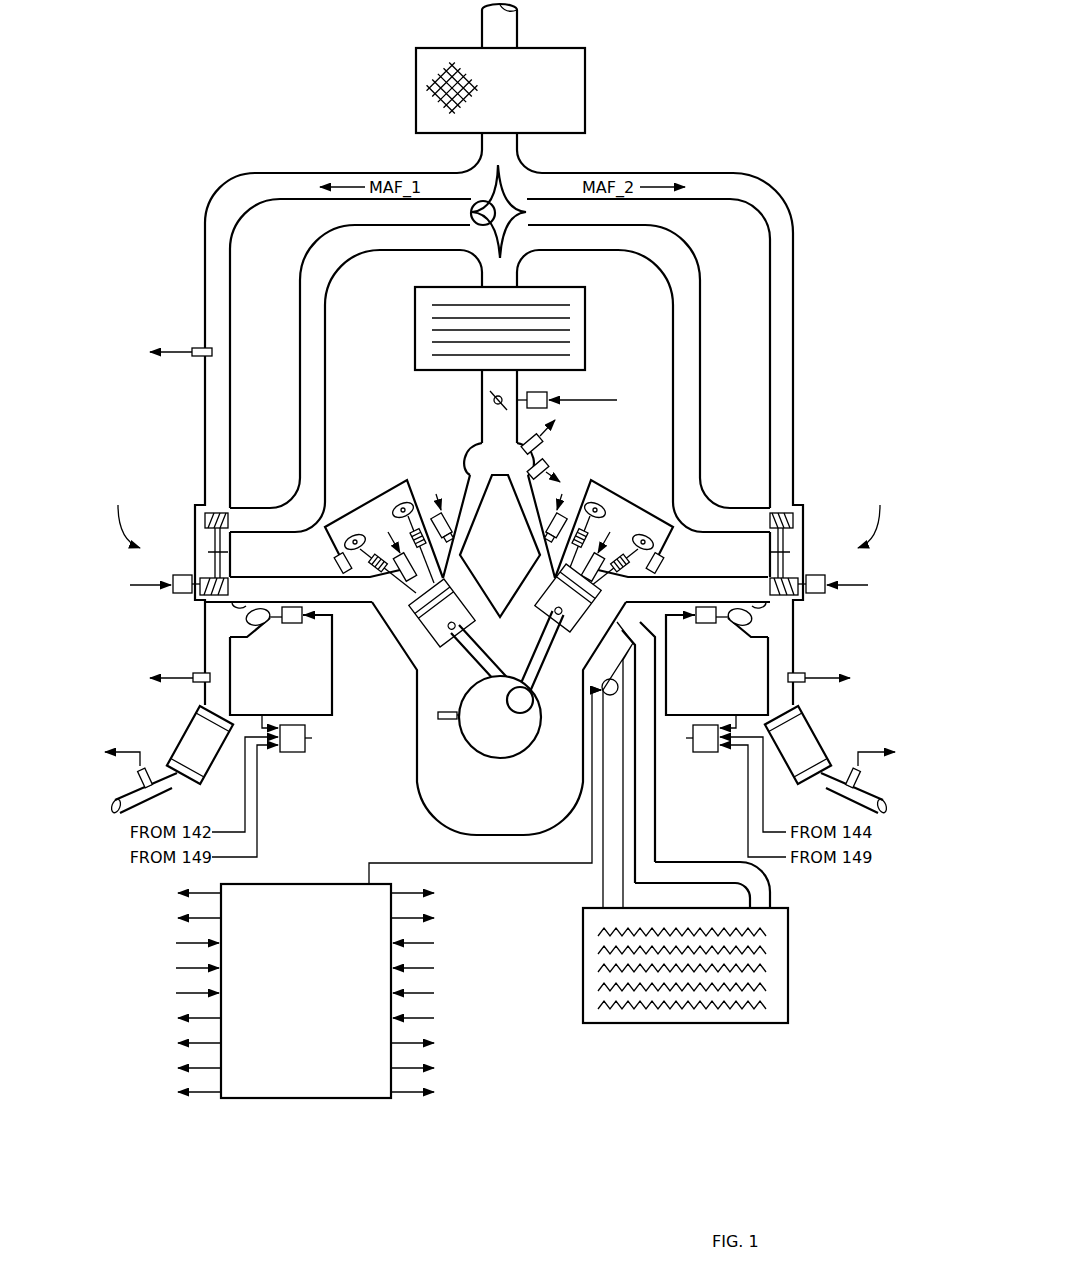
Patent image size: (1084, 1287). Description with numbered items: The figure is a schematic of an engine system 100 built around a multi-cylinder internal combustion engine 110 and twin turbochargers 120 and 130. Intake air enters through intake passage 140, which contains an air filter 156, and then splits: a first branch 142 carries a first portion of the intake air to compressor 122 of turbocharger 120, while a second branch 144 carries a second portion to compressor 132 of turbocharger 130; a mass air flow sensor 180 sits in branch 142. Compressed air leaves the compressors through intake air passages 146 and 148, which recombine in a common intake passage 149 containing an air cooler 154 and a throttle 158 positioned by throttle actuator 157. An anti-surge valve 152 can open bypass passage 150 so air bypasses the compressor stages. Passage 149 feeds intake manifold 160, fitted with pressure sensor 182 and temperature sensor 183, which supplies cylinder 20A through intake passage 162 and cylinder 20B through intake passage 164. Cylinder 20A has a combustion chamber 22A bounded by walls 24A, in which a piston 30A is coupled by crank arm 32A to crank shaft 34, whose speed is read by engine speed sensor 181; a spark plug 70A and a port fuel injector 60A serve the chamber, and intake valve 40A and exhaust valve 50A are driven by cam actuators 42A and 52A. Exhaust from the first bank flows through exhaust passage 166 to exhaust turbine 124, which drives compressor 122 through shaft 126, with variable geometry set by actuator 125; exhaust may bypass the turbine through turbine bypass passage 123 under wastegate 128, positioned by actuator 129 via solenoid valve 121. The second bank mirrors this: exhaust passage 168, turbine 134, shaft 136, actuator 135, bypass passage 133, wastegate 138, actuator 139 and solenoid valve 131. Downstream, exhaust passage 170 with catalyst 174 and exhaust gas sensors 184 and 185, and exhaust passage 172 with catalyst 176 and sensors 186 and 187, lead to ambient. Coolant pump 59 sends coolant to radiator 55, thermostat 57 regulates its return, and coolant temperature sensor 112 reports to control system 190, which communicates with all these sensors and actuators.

The engine system 100 is at (775, 28).
The internal combustion engine 110 is at (428, 798).
The engine coolant temperature sensor 112 is at (338, 556).
The turbocharger 120 is at (120, 514).
The solenoid valve 121 is at (292, 753).
The compressor 122 is at (204, 520).
The turbine bypass passage 123 is at (248, 628).
The exhaust turbine 124 is at (186, 594).
The actuator 125 is at (178, 574).
The shaft 126 is at (222, 556).
The wastegate 128 is at (276, 625).
The actuator 129 is at (296, 625).
The turbocharger 130 is at (878, 514).
The solenoid valve 131 is at (710, 753).
The compressor 132 is at (794, 520).
The turbine bypass passage 133 is at (750, 628).
The exhaust turbine 134 is at (812, 594).
The actuator 135 is at (820, 574).
The shaft 136 is at (776, 556).
The wastegate 138 is at (724, 625).
The actuator 139 is at (702, 624).
The intake passage 140 is at (512, 31).
The first branch of the intake passage 142 is at (296, 178).
The second branch of the intake passage 144 is at (712, 178).
The intake air passage 146 is at (326, 333).
The intake air passage 148 is at (690, 333).
The common intake passage 149 is at (488, 422).
The bypass passage 150 is at (500, 200).
The anti-surge valve 152 is at (470, 212).
The air cooler 154 is at (582, 339).
The air filter 156 is at (566, 95).
The throttle actuator 157 is at (548, 394).
The throttle 158 is at (488, 396).
The intake manifold 160 is at (470, 453).
The intake passage 162 is at (478, 520).
The intake passage 164 is at (468, 500).
The exhaust passage 166 is at (280, 572).
The exhaust passage 168 is at (686, 578).
The exhaust passage 170 is at (240, 694).
The exhaust passage 172 is at (766, 694).
The catalyst 174 is at (185, 742).
The catalyst 176 is at (808, 735).
The mass air flow sensor 180 is at (200, 346).
The engine speed sensor 181 is at (447, 720).
The intake manifold pressure sensor 182 is at (546, 448).
The intake manifold temperature sensor 183 is at (550, 468).
The exhaust gas sensor 184 is at (200, 670).
The exhaust gas sensor 185 is at (138, 776).
The exhaust gas sensor 186 is at (798, 670).
The exhaust gas sensor 187 is at (856, 762).
The control system 190 is at (337, 896).
The cylinder 20A is at (418, 660).
The cylinder 20B is at (538, 608).
The combustion chamber 22A is at (410, 620).
The combustion chamber walls 24A is at (425, 630).
The piston 30A is at (435, 670).
The crank arm 32A is at (520, 680).
The crank shaft 34 is at (496, 740).
The intake valve 40A is at (435, 505).
The intake valve actuator 42A is at (398, 502).
The exhaust valve 50A is at (392, 605).
The exhaust valve actuator 52A is at (350, 525).
The radiator 55 is at (772, 957).
The thermostat 57 is at (755, 903).
The coolant pump 59 is at (615, 680).
The fuel injector 60A is at (468, 545).
The spark plug 70A is at (394, 530).